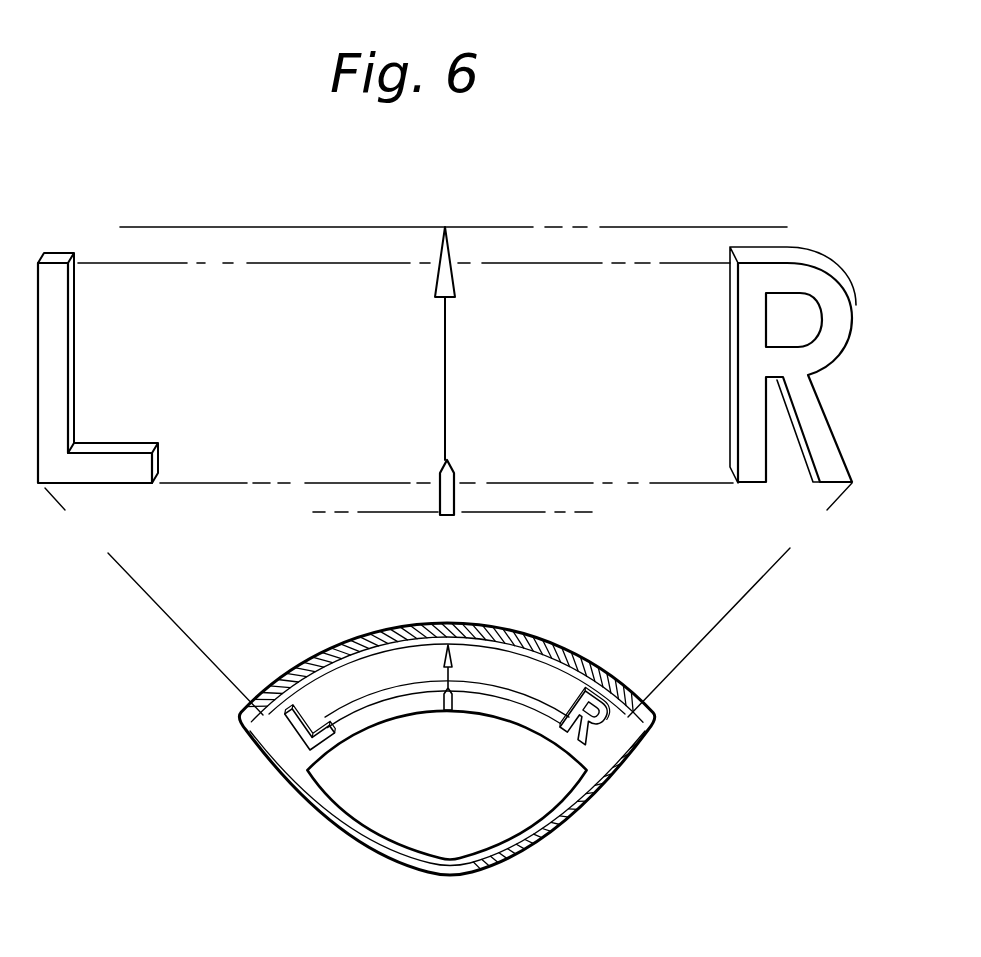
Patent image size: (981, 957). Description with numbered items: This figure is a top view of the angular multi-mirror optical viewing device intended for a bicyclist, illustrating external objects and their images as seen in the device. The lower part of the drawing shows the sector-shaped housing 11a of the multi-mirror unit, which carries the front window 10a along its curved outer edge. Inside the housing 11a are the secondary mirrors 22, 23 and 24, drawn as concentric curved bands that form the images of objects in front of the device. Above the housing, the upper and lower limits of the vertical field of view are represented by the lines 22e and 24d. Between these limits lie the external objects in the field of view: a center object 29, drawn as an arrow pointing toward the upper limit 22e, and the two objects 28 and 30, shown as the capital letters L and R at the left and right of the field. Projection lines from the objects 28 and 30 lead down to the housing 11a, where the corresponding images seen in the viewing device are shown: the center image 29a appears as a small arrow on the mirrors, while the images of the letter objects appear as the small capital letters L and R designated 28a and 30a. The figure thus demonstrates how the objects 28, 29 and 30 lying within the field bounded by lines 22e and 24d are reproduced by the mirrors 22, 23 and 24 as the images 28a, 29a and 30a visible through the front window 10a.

The front window 10a is at (617, 683).
The housing 11a is at (572, 805).
The secondary mirror 22 is at (488, 675).
The upper limit of the vertical field of view 22e is at (290, 226).
The secondary mirror 23 is at (420, 692).
The secondary mirror 24 is at (388, 717).
The lower limit of the vertical field of view 24d is at (365, 513).
The object 28 is at (58, 332).
The image of object L 28a is at (292, 724).
The center object 29 is at (448, 308).
The center image 29a is at (446, 651).
The object 30 is at (748, 357).
The image of object R 30a is at (588, 693).